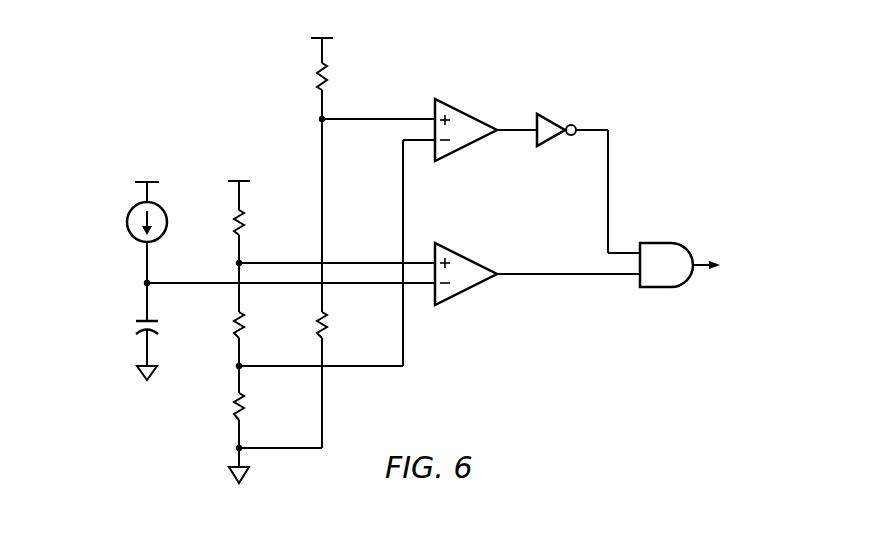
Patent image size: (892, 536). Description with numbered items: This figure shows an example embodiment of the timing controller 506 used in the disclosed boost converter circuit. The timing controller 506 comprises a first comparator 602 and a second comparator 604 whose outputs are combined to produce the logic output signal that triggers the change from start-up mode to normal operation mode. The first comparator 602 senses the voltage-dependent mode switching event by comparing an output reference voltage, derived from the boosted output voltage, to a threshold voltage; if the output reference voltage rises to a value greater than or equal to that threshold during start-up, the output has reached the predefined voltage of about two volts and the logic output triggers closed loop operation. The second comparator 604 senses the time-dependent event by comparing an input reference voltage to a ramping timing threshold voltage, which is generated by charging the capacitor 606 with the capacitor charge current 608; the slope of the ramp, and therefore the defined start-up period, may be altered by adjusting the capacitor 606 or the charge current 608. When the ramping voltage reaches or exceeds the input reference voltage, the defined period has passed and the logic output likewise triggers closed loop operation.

The timing controller 506 is at (649, 72).
The first comparator 602 is at (467, 112).
The second comparator 604 is at (467, 292).
The capacitor 606 is at (134, 330).
The capacitor charge current 608 is at (127, 219).